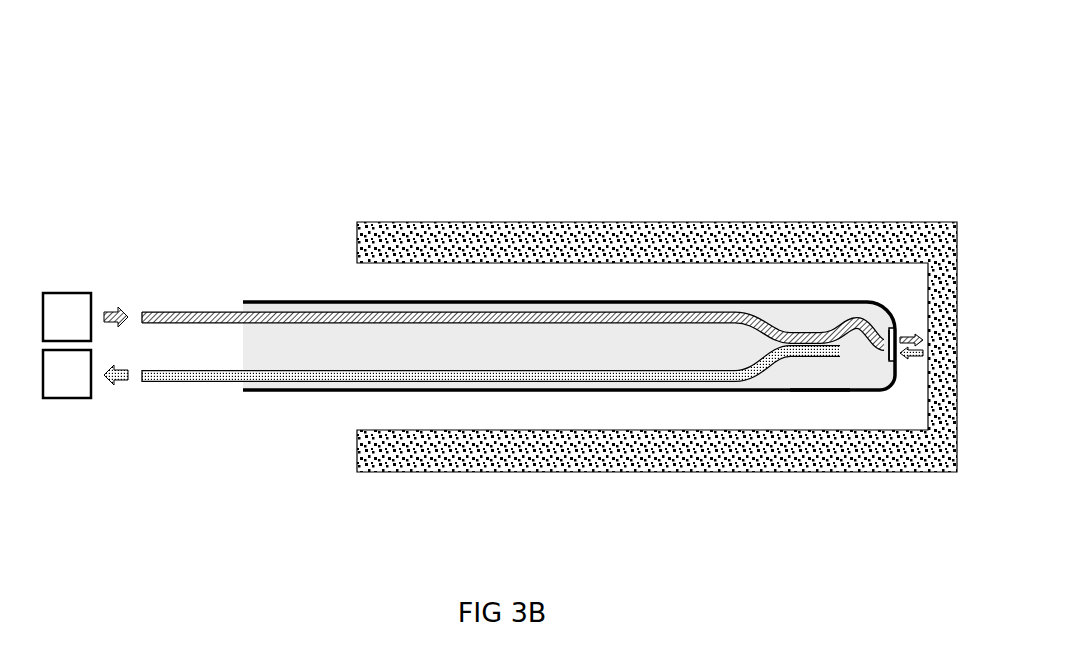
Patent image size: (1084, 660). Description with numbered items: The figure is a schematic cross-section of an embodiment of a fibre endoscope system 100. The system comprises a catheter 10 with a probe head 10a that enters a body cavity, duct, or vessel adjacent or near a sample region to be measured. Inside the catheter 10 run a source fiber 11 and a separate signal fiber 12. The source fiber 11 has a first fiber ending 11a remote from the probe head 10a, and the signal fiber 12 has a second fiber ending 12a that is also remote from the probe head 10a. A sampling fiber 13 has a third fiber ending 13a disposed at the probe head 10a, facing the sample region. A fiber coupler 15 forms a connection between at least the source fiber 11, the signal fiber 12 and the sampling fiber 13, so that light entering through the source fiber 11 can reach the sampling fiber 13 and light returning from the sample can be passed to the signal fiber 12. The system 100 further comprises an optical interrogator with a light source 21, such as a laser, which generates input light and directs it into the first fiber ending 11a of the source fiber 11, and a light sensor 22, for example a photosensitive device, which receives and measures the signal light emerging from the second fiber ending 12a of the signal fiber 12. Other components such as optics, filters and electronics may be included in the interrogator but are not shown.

The fibre endoscope system 100 is at (120, 106).
The catheter 10 is at (587, 300).
The probe head 10a is at (818, 405).
The source fiber 11 is at (330, 308).
The first fiber ending 11a is at (143, 308).
The signal fiber 12 is at (330, 384).
The second fiber ending 12a is at (143, 385).
The sampling fiber 13 is at (856, 312).
The third fiber ending 13a is at (887, 362).
The fiber coupler 15 is at (803, 328).
The light source 21 is at (67, 317).
The light sensor 22 is at (67, 374).